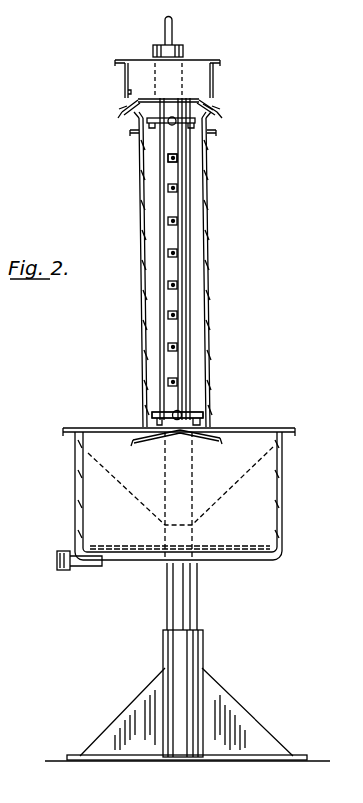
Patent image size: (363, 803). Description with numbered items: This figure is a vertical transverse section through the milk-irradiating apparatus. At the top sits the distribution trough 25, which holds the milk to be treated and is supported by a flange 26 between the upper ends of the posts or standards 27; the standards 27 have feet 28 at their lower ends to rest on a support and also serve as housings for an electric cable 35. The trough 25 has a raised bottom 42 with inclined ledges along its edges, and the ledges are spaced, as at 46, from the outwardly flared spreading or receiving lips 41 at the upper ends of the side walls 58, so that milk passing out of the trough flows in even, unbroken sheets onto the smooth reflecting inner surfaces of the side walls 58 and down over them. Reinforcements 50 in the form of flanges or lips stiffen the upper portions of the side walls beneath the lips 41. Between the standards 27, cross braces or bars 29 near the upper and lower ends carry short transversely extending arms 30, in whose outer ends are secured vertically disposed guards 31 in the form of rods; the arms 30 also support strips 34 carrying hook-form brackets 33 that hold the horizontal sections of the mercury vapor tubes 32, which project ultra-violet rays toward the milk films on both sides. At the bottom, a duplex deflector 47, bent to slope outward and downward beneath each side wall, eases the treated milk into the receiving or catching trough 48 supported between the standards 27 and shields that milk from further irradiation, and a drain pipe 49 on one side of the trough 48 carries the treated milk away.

The top or distribution trough 25 is at (213, 80).
The flange 26 is at (216, 62).
The posts or standards 27 is at (183, 52).
The feet 28 is at (185, 663).
The cross braces or bars 29 is at (176, 125).
The transversely extending arms 30 is at (203, 414).
The guards 31 is at (193, 256).
The mercury vapor tubes 32 is at (178, 314).
The brackets 33 is at (168, 160).
The supporting strips 34 is at (180, 332).
The electric cable 35 is at (165, 29).
The spreading or receiving lips 41 is at (217, 110).
The raised bottom 42 is at (199, 99).
The aperture or space 46 is at (215, 108).
The deflector 47 is at (208, 446).
The receiving or catching trough 48 is at (282, 512).
The drain pipe 49 is at (80, 571).
The reinforcements 50 is at (216, 131).
The outer tube 58 is at (207, 186).